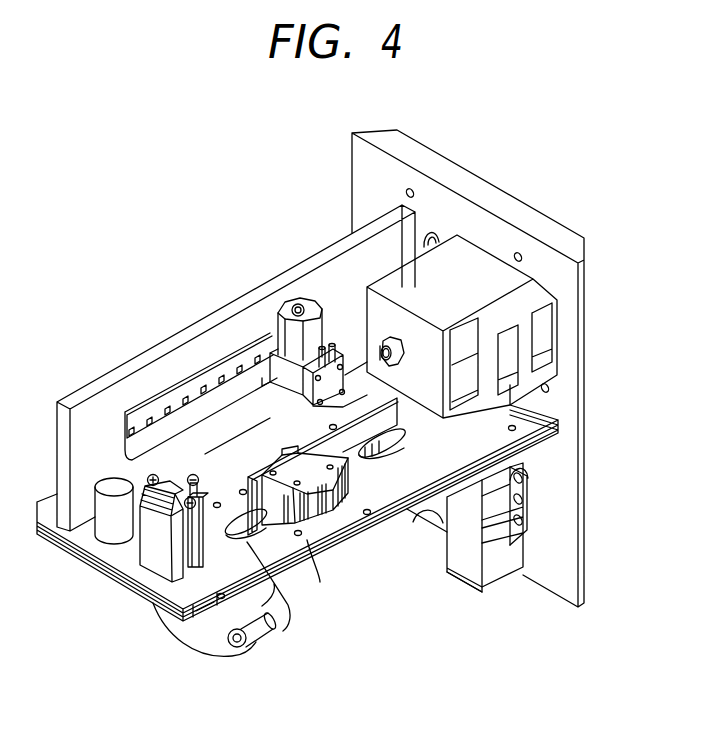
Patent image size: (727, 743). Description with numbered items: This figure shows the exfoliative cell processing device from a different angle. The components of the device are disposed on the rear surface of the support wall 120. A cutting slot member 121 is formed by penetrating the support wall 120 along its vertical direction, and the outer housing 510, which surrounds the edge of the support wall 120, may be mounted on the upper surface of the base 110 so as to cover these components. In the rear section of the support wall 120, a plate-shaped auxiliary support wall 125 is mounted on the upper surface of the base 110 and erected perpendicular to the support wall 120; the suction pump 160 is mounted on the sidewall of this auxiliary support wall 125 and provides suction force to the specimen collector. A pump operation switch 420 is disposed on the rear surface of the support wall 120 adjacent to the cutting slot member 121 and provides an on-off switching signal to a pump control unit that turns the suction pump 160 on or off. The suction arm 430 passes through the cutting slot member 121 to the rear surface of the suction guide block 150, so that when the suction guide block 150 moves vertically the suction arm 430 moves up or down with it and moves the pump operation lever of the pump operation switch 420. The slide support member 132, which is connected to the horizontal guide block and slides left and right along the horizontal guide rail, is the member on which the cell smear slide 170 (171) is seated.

The base 110 is at (365, 194).
The support wall 120 is at (122, 582).
The cutting slot member 121 is at (240, 523).
The auxiliary support wall 125 is at (158, 346).
The slide support member 132 is at (497, 568).
The suction guide block 150 is at (283, 630).
The suction pump 160 is at (291, 378).
The cell smear slide 170 is at (465, 525).
The holder block 171 is at (465, 525).
The pump operation switch 420 is at (337, 505).
The suction arm 430 is at (243, 508).
The outer housing 510 is at (535, 300).